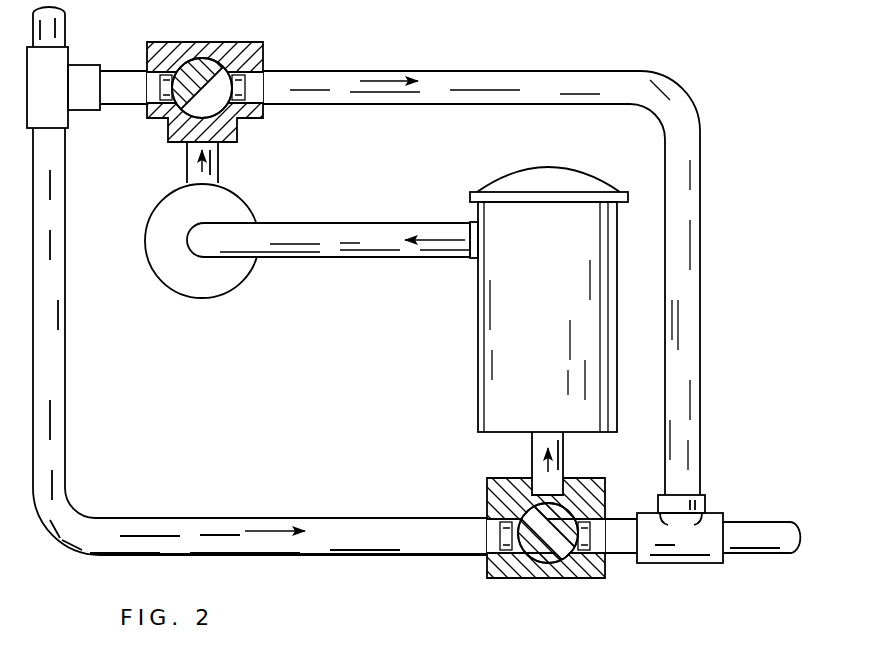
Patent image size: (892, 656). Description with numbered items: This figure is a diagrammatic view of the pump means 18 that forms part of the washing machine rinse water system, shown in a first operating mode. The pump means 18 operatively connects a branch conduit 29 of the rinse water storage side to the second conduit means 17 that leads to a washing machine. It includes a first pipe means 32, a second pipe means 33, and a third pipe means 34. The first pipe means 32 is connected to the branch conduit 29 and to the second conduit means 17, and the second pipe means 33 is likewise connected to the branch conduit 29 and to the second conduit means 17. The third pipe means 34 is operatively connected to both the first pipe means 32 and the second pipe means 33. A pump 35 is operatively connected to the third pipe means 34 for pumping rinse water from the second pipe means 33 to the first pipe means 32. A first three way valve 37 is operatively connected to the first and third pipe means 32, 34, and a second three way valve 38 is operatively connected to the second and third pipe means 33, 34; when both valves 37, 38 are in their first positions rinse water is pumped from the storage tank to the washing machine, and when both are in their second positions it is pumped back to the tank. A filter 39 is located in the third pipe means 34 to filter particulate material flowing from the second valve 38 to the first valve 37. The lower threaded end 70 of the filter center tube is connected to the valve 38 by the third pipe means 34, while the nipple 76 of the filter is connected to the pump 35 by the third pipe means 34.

The second conduit means 17 is at (780, 563).
The pump means 18 is at (550, 60).
The branch conduit 29 is at (62, 28).
The first pipe means 32 is at (363, 63).
The second pipe means 33 is at (418, 557).
The third pipe means 34 is at (383, 267).
The pump 35 is at (208, 290).
The first three way valve 37 is at (253, 58).
The second three way valve 38 is at (585, 572).
The filter 39 is at (498, 400).
The lower threaded end 70 is at (533, 437).
The nipple 76 is at (475, 257).